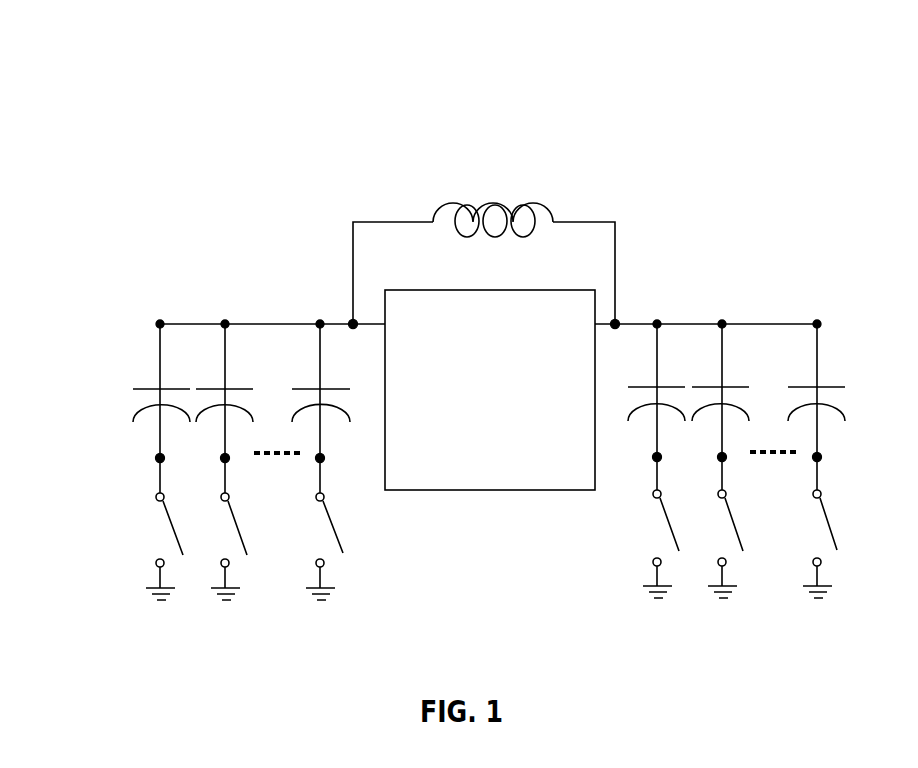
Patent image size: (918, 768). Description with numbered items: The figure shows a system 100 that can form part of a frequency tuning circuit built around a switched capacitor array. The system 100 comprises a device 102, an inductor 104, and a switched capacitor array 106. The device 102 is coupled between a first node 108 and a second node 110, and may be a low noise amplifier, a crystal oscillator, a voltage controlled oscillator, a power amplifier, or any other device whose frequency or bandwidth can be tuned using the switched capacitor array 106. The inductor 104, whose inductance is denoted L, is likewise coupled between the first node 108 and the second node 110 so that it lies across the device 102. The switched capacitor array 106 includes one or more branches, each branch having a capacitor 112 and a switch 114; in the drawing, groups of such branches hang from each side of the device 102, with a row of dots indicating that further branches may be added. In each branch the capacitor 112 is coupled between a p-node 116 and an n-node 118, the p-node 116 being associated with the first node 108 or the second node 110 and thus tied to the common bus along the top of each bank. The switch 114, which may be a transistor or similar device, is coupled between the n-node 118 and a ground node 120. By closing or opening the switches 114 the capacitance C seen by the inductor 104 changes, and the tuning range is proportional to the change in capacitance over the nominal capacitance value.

The system 100 is at (719, 106).
The device 102 is at (482, 490).
The inductor 104 is at (553, 222).
The switched capacitor array 106 is at (58, 447).
The first node 108 is at (353, 326).
The second node 110 is at (617, 324).
The capacitor 112 is at (287, 372).
The switch 114 is at (307, 520).
The p-node 116 is at (320, 324).
The n-node 118 is at (318, 456).
The ground node 120 is at (303, 611).